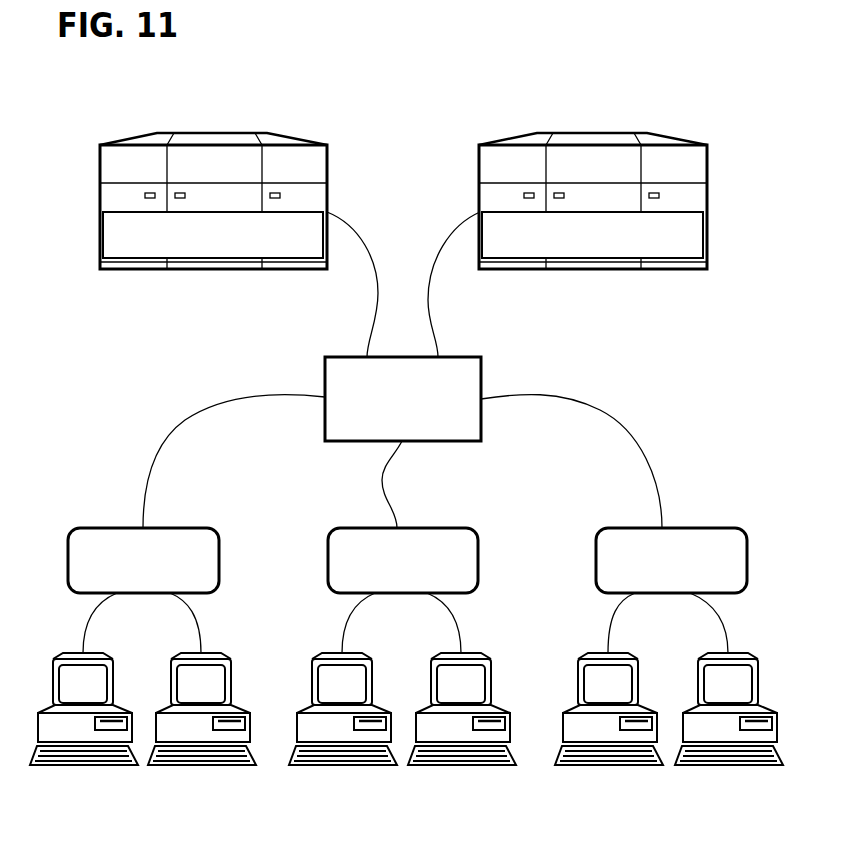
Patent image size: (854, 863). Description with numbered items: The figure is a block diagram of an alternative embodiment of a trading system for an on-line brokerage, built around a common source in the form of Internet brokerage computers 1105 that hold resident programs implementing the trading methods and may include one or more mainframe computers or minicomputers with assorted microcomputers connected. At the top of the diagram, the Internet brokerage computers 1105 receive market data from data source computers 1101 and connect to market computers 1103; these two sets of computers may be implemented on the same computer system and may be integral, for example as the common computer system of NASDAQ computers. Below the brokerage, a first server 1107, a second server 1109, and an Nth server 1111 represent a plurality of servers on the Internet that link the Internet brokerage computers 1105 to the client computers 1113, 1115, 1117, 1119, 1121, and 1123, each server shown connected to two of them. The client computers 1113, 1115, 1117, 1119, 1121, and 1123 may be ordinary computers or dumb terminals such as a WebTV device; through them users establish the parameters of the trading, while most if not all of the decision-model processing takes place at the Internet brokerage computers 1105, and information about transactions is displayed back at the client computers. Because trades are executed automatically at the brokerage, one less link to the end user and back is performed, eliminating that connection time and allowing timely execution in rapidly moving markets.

The data source computers 1101 is at (212, 133).
The market computers 1103 is at (595, 132).
The Internet brokerage computers 1105 is at (481, 378).
The server 1107 is at (219, 562).
The server 1109 is at (478, 562).
The server 1111 is at (747, 562).
The client computer 1113 is at (93, 768).
The client computer 1115 is at (210, 768).
The client computer 1117 is at (350, 768).
The client computer 1119 is at (470, 768).
The client computer 1121 is at (617, 768).
The client computer 1123 is at (737, 768).